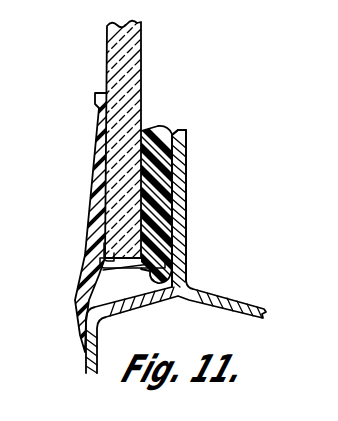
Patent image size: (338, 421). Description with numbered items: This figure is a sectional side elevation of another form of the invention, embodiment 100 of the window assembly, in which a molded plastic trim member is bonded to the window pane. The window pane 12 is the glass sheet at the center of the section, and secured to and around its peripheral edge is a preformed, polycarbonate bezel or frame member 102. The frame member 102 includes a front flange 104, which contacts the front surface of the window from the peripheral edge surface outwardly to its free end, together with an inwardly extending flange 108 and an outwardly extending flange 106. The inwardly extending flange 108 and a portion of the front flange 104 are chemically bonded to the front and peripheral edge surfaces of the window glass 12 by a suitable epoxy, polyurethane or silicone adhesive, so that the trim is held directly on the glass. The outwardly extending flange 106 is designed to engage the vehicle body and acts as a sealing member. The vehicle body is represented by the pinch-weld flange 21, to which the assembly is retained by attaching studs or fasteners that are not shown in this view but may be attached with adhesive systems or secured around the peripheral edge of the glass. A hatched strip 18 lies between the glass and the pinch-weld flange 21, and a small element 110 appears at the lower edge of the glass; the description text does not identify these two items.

The window assembly embodiment 100 is at (72, 85).
The window pane 12 is at (142, 55).
The spacer strip 18 is at (158, 126).
The pinch-weld flange 21 is at (189, 158).
The bezel or frame member 102 is at (95, 151).
The front flange 104 is at (97, 167).
The outwardly extending flange 106 is at (37, 338).
The inwardly extending flange 108 is at (43, 282).
The retaining clip 110 is at (113, 245).